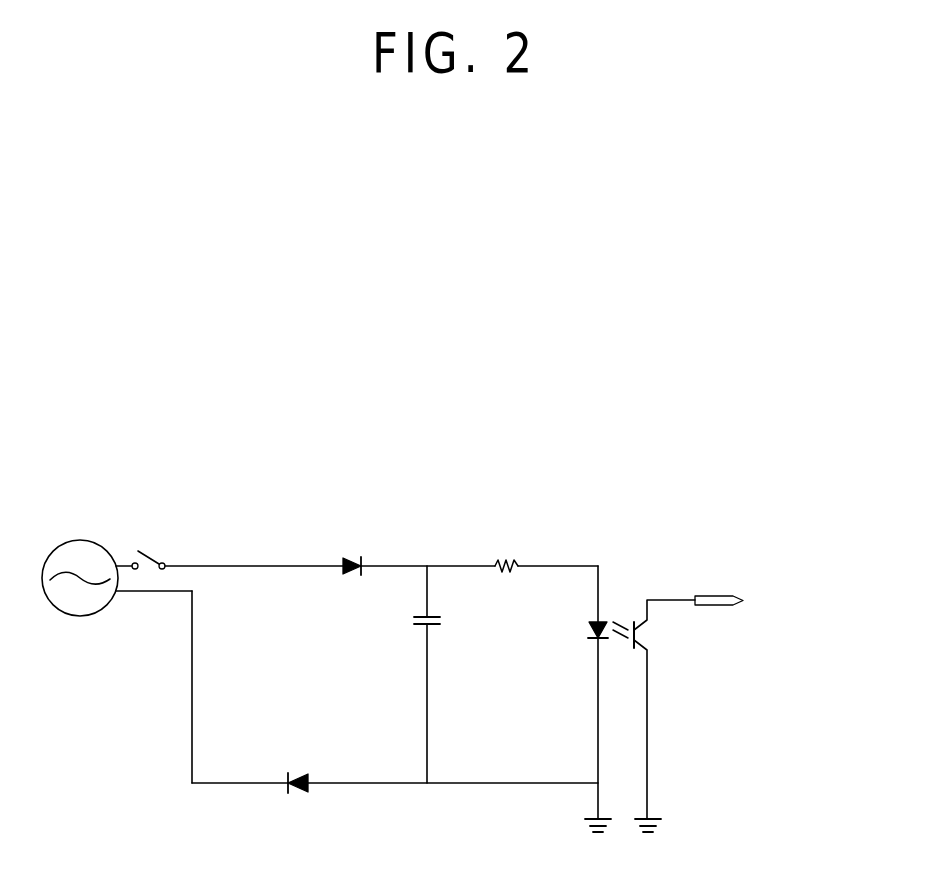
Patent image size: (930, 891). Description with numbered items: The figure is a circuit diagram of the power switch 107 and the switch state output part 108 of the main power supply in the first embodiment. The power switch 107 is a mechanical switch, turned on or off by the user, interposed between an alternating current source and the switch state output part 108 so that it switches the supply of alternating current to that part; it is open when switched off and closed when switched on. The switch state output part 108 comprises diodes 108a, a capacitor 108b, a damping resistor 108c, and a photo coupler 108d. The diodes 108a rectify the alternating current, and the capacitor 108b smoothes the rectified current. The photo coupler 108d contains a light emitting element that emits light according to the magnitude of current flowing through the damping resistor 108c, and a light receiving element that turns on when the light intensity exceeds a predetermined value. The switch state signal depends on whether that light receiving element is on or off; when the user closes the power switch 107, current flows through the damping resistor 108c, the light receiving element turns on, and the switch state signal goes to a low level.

The power switch 107 is at (152, 552).
The switch state output part 108 is at (560, 476).
The diodes 108a is at (352, 557).
The capacitor 108b is at (418, 612).
The damping resistor 108c is at (507, 557).
The photo coupler 108d is at (627, 620).